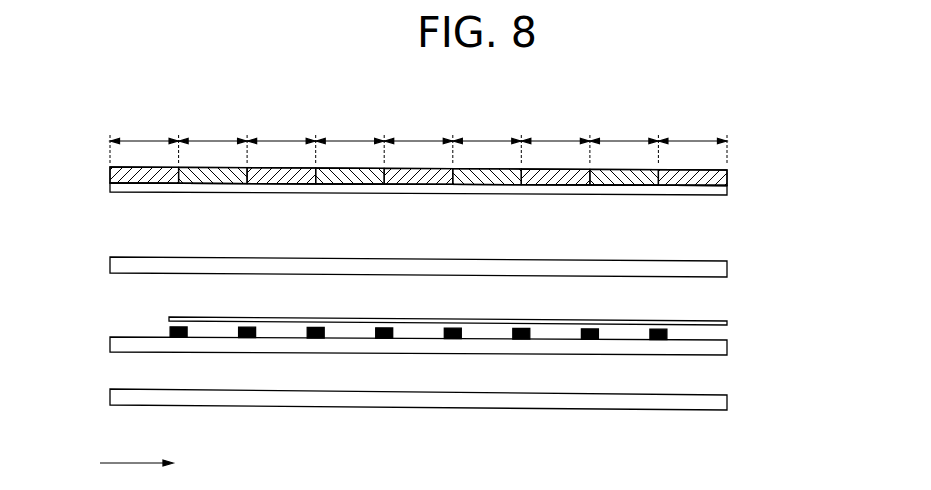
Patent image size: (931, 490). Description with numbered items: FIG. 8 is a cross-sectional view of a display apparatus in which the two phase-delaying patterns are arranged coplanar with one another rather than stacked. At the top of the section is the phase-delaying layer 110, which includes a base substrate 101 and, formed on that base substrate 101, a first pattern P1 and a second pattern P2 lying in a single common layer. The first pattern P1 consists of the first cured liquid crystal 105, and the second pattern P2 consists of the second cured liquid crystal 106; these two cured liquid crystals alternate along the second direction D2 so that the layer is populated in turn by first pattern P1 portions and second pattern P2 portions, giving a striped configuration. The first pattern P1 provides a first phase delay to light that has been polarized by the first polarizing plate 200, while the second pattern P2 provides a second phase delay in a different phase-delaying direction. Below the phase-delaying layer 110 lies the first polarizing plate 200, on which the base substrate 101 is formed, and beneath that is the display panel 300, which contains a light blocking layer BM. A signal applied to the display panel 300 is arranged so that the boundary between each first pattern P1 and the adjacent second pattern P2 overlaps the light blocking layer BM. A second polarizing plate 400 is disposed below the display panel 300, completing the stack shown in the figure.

The first cured liquid crystal 105 is at (728, 172).
The base substrate 101 is at (728, 189).
The second cured liquid crystal 106 is at (641, 186).
The phase-delaying layer 110 is at (478, 200).
The first polarizing plate 200 is at (728, 267).
The display panel 300 is at (476, 335).
The light blocking layer BM is at (666, 332).
The second polarizing plate 400 is at (728, 401).
The first pattern P1 is at (418, 127).
The second pattern P2 is at (419, 127).
The second direction D2 is at (154, 464).